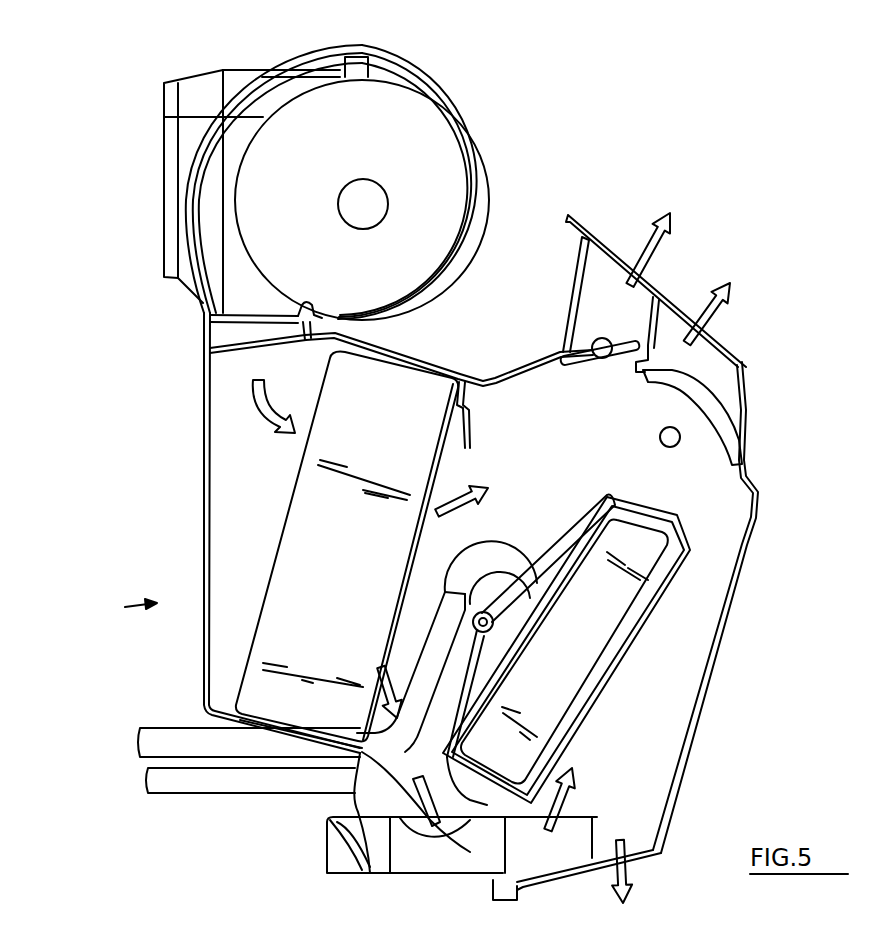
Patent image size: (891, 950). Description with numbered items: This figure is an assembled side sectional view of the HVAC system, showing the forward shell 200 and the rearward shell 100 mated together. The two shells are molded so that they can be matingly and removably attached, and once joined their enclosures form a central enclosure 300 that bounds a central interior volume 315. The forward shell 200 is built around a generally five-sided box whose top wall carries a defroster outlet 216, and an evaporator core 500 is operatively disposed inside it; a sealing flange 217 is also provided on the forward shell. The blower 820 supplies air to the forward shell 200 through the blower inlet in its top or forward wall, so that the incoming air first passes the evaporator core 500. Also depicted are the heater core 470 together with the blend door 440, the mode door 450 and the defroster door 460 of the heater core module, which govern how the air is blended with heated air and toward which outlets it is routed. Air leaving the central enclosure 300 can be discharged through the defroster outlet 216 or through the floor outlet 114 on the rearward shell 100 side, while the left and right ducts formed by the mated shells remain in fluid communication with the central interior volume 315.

The rearward shell 100 is at (727, 620).
The floor outlet 114 is at (640, 860).
The forward shell 200 is at (208, 485).
The defroster outlet 216 is at (600, 292).
The sealing flange 217 is at (470, 423).
The central enclosure 300 is at (112, 607).
The central interior volume 315 is at (235, 432).
The blend door 440 is at (556, 545).
The mode door 450 is at (730, 410).
The defroster door 460 is at (598, 366).
The heater core 470 is at (596, 649).
The evaporator core 500 is at (375, 549).
The blower 820 is at (190, 135).